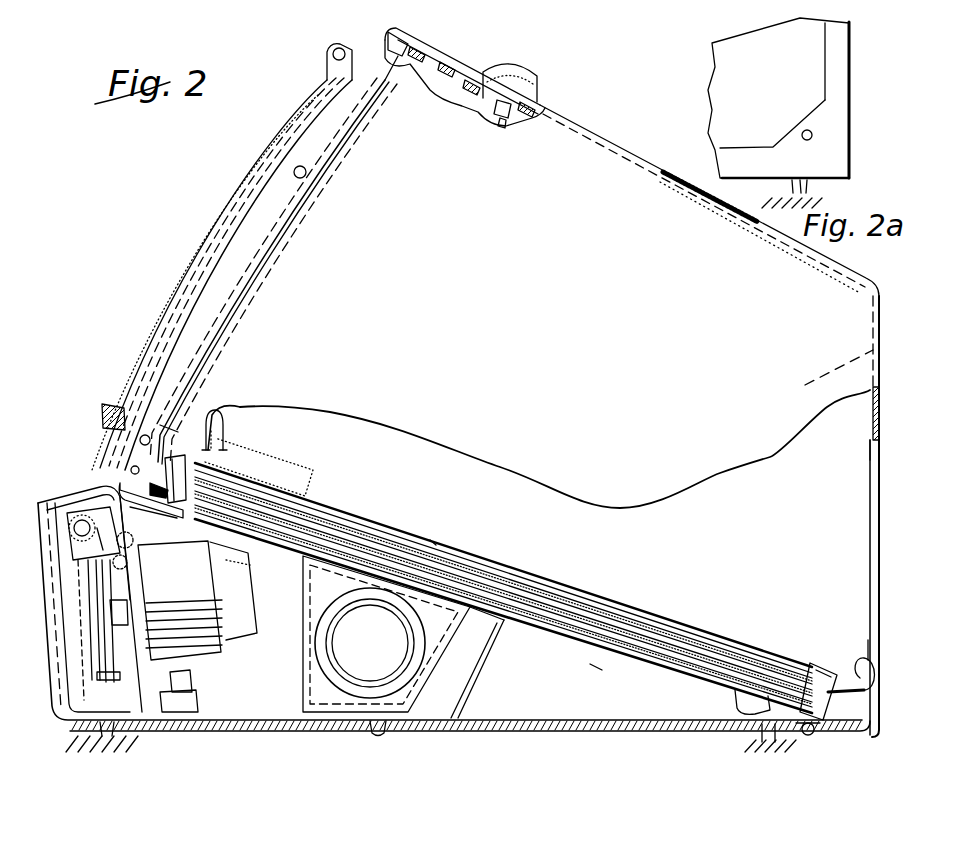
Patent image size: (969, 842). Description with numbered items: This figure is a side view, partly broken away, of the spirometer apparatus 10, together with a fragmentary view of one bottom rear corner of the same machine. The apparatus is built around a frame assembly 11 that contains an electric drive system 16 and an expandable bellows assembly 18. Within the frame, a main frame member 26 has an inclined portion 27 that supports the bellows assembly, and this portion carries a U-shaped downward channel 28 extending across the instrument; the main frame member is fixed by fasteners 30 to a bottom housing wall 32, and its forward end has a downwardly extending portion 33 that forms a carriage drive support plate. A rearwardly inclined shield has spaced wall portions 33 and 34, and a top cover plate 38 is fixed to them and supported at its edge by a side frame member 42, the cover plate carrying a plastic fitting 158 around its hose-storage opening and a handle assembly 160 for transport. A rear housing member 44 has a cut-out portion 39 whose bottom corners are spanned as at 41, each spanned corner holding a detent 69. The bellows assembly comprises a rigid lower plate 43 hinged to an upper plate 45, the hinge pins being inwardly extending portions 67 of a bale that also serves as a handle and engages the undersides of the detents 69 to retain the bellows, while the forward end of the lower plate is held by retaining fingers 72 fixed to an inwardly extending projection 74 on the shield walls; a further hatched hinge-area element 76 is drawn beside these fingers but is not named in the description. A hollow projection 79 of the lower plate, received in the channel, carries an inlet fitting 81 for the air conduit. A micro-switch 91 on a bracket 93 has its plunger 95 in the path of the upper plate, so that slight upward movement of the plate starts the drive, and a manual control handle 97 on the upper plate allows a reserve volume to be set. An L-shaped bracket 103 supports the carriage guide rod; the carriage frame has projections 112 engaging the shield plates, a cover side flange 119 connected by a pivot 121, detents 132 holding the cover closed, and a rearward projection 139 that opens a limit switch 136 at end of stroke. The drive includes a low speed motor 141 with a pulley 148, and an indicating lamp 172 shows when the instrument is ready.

In FIG. 2, the spirometer apparatus 10 is at (703, 266).
In FIG. 2, the frame assembly 11 is at (490, 728).
In FIG. 2, the electric drive system 16 is at (224, 662).
In FIG. 2, the bellows assembly 18 is at (488, 556).
In FIG. 2, the main frame member 26 is at (573, 656).
In FIG. 2, the inclined portion 27 is at (602, 672).
In FIG. 2, the U-shaped downward channel 28 is at (485, 660).
In FIG. 2, the fasteners 30 is at (378, 733).
In FIG. 2, the bottom housing wall 32 is at (596, 728).
In FIG. 2, the downwardly extending portion 33 is at (150, 720).
In FIG. 2, the wall portion 34 is at (250, 276).
In FIG. 2, the top cover plate 38 is at (545, 108).
In FIG. 2, the cut-out portion 39 is at (870, 447).
In FIG. 2A, the cut-out portion 39 is at (825, 61).
In FIG. 2, the spanned corner 41 is at (868, 640).
In FIG. 2A, the spanned corner 41 is at (806, 116).
In FIG. 2, the side frame member 42 is at (614, 540).
In FIG. 2, the lower plate 43 is at (434, 555).
In FIG. 2, the rear housing member 44 is at (816, 374).
In FIG. 2A, the rear housing member 44 is at (842, 108).
In FIG. 2, the upper plate 45 is at (225, 428).
In FIG. 2, the inwardly extending portions 67 is at (848, 712).
In FIG. 2, the detent 69 is at (860, 655).
In FIG. 2A, the detent 69 is at (813, 135).
In FIG. 2, the retaining fingers 72 is at (130, 480).
In FIG. 2, the inwardly extending projection 74 is at (120, 515).
In FIG. 2, the hinge block 76 is at (124, 455).
In FIG. 2, the hollow projection 79 is at (445, 630).
In FIG. 2, the inlet fitting 81 is at (345, 680).
In FIG. 2, the micro-switch 91 is at (145, 440).
In FIG. 2, the bracket 93 is at (215, 470).
In FIG. 2, the plunger 95 is at (170, 430).
In FIG. 2, the manual control handle 97 is at (300, 472).
In FIG. 2, the L-shaped bracket 103 is at (72, 575).
In FIG. 2, the projections 112 is at (430, 48).
In FIG. 2, the side flange 119 is at (262, 216).
In FIG. 2, the pivot 121 is at (135, 470).
In FIG. 2, the detents 132 is at (297, 168).
In FIG. 2, the limit switch 136 is at (120, 556).
In FIG. 2, the rearward projection 139 is at (145, 535).
In FIG. 2, the low speed motor 141 is at (200, 606).
In FIG. 2, the pulley 148 is at (95, 655).
In FIG. 2, the plastic fitting 158 is at (668, 168).
In FIG. 2, the handle assembly 160 is at (510, 75).
In FIG. 2, the indicating lamp 172 is at (185, 380).